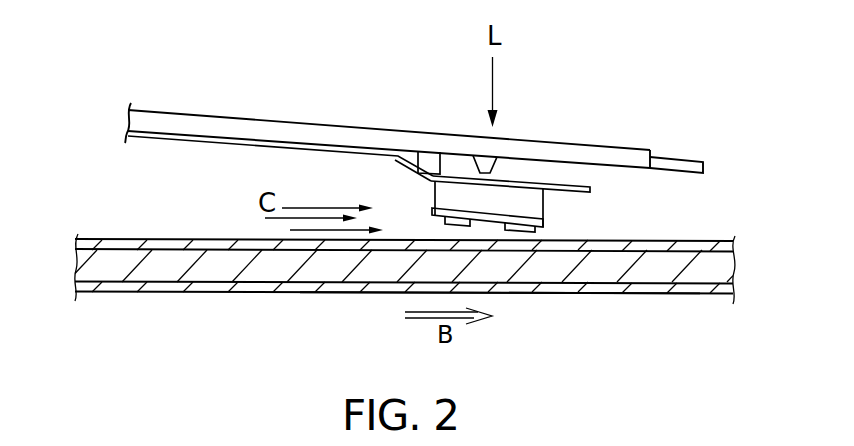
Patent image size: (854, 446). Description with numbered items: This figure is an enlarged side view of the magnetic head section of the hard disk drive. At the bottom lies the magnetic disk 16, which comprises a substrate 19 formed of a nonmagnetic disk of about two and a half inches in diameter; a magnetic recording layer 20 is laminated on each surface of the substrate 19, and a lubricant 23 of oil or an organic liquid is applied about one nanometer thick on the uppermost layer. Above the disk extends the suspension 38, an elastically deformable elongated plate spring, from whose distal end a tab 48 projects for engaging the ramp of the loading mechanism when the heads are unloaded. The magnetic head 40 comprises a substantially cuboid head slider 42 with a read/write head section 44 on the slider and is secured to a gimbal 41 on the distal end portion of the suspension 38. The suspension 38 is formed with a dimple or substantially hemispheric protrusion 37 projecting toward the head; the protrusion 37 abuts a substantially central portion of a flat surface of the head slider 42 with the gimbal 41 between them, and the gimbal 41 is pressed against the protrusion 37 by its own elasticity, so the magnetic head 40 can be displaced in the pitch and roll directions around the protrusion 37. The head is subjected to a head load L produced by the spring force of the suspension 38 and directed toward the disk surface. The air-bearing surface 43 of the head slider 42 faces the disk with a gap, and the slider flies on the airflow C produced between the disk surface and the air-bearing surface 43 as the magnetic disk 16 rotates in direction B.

The magnetic disk 16 is at (234, 293).
The substrate 19 is at (680, 285).
The magnetic recording layer 20 is at (690, 256).
The lubricant 23 is at (641, 240).
The protrusion 37 is at (474, 160).
The suspension 38 is at (274, 128).
The magnetic head 40 is at (412, 197).
The gimbal 41 is at (441, 166).
The head slider 42 is at (517, 198).
The air-bearing surface 43 is at (490, 234).
The read/write head section 44 is at (541, 203).
The tab 48 is at (684, 157).